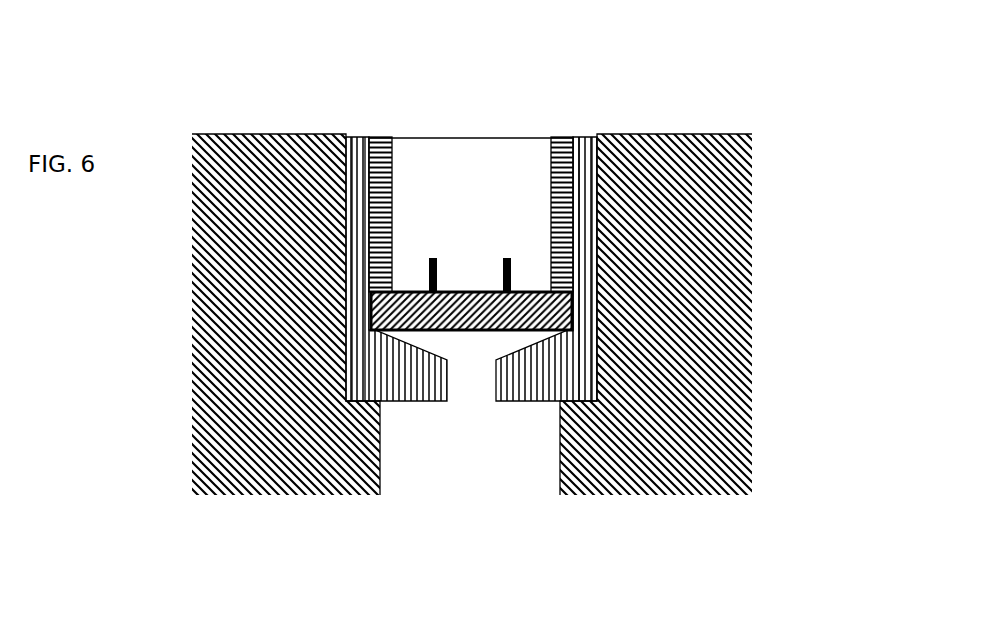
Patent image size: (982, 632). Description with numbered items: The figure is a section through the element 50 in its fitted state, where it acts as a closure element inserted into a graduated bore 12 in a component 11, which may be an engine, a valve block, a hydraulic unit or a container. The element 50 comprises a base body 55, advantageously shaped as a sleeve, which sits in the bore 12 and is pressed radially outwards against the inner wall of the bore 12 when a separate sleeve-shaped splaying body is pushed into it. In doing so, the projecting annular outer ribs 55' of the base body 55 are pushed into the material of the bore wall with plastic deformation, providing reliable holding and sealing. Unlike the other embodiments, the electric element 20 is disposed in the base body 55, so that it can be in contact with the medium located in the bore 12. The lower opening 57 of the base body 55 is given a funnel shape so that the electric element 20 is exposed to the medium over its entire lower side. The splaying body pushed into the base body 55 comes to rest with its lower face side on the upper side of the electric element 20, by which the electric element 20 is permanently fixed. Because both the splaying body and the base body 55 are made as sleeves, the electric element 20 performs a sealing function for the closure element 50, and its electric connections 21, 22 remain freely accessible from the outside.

The component 11 is at (220, 433).
The bore 12 is at (558, 535).
The electric element 20 is at (592, 318).
The electric connection 21 is at (433, 258).
The electric connection 22 is at (508, 258).
The element 50 is at (396, 128).
The base body 55 is at (311, 236).
The annular outer ribs 55' is at (713, 269).
The lower opening 57 is at (478, 347).